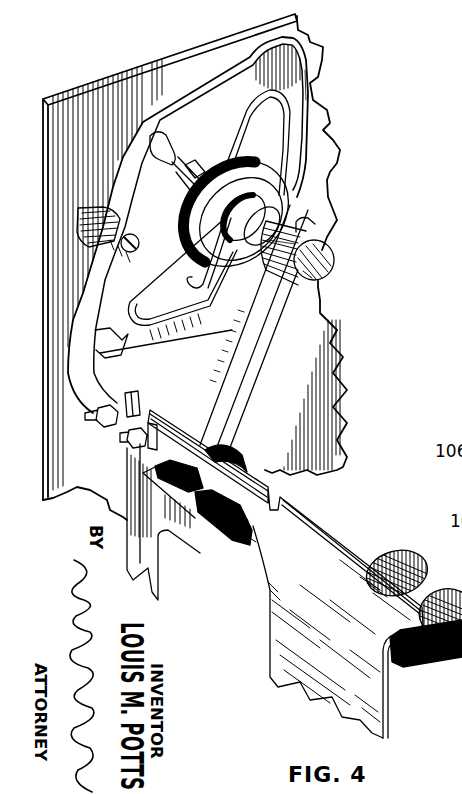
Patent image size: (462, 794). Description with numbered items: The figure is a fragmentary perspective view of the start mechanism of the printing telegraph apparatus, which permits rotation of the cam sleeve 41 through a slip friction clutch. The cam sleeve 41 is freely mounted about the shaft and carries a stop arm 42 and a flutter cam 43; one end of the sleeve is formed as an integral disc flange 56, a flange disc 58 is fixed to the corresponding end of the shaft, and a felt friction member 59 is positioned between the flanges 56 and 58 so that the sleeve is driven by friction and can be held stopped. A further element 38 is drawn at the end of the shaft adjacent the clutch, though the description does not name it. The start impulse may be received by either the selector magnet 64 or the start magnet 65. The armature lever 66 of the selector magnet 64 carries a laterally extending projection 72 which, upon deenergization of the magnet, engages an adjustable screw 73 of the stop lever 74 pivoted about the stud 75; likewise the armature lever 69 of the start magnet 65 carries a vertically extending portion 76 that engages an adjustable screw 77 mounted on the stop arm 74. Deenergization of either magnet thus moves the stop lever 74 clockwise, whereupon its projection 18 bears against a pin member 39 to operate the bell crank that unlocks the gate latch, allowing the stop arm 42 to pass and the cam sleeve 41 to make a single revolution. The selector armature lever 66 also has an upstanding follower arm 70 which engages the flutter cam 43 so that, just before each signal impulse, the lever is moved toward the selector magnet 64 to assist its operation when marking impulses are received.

The projection 18 is at (160, 142).
The knob 38 is at (330, 258).
The pin member 39 is at (150, 136).
The cam sleeve 41 is at (296, 230).
The stop arm 42 is at (190, 283).
The flutter cam 43 is at (295, 220).
The disc flange 56 is at (290, 175).
The flange disc 58 is at (233, 152).
The felt friction member 59 is at (258, 178).
The selector magnet 64 is at (387, 553).
The start magnet 65 is at (233, 452).
The armature lever 66 is at (387, 700).
The armature lever 69 is at (193, 543).
The follower arm 70 is at (233, 410).
The laterally extending projection 72 is at (160, 420).
The adjustable screw 73 is at (126, 442).
The stop lever 74 is at (102, 283).
The stud 75 is at (98, 206).
The vertically extending portion 76 is at (131, 399).
The adjustable screw 77 is at (97, 426).